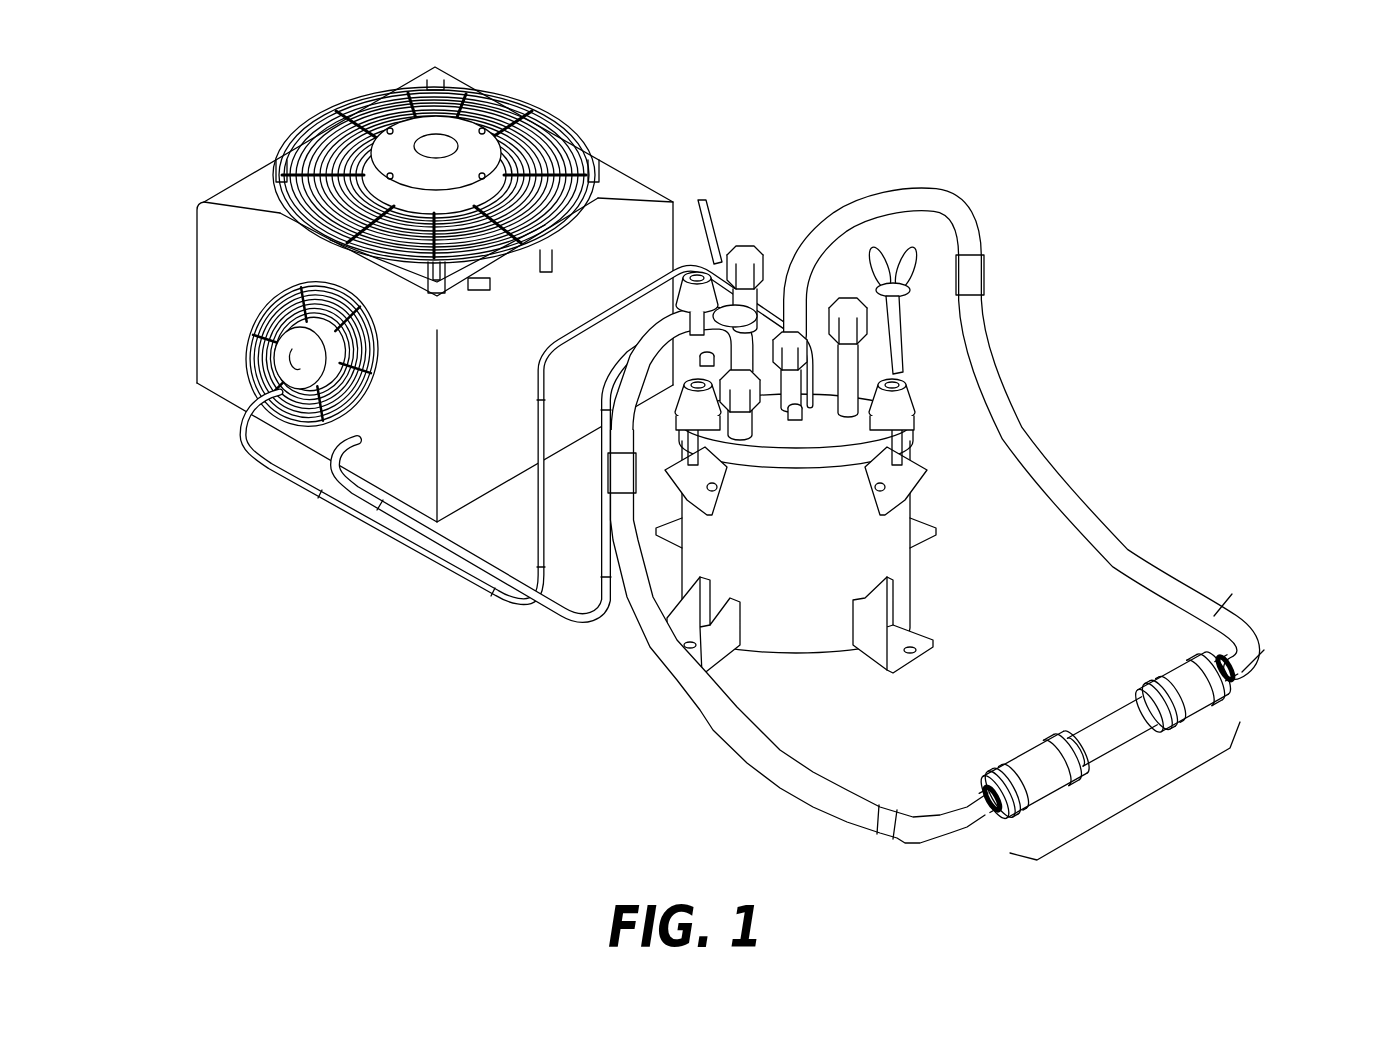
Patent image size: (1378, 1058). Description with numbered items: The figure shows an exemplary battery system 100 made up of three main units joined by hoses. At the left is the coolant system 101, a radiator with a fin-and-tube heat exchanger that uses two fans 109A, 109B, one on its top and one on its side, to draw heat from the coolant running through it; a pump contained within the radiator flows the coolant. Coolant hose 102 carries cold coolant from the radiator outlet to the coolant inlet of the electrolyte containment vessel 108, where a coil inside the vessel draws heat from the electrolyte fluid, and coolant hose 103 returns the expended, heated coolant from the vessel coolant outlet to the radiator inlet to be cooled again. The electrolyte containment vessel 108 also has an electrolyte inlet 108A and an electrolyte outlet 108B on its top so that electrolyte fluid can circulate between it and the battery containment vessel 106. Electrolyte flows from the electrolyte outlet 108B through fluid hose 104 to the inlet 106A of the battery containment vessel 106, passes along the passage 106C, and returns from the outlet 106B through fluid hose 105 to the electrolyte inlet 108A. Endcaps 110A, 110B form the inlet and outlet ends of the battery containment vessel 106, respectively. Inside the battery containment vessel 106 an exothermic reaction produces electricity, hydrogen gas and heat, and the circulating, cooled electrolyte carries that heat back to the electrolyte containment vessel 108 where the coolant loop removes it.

The battery system 100 is at (1044, 144).
The coolant system 101 is at (196, 335).
The coolant hose 102 is at (293, 480).
The coolant hose 103 is at (567, 613).
The fluid hose 104 is at (677, 677).
The fluid hose 105 is at (1118, 538).
The battery containment vessel 106 is at (1107, 741).
The inlet 106A is at (998, 818).
The outlet 106B is at (1228, 680).
The passage 106C is at (1080, 720).
The electrolyte containment vessel 108 is at (912, 570).
The inlet 108A is at (787, 400).
The outlet 108B is at (737, 400).
The fan 109A is at (255, 337).
The fan 109B is at (523, 113).
The endcap 110A is at (1012, 760).
The endcap 110B is at (1145, 672).